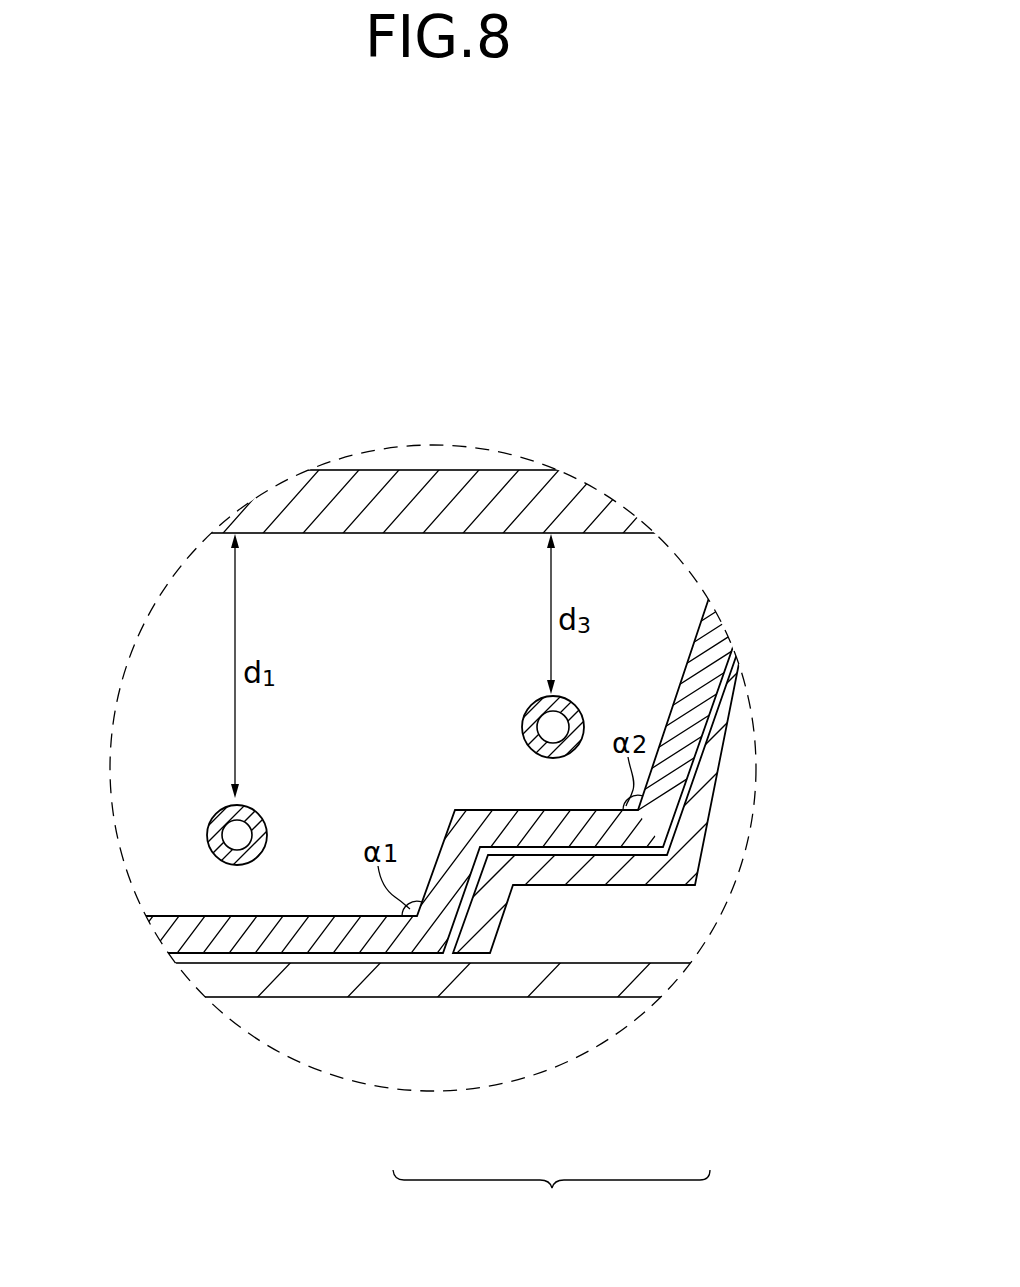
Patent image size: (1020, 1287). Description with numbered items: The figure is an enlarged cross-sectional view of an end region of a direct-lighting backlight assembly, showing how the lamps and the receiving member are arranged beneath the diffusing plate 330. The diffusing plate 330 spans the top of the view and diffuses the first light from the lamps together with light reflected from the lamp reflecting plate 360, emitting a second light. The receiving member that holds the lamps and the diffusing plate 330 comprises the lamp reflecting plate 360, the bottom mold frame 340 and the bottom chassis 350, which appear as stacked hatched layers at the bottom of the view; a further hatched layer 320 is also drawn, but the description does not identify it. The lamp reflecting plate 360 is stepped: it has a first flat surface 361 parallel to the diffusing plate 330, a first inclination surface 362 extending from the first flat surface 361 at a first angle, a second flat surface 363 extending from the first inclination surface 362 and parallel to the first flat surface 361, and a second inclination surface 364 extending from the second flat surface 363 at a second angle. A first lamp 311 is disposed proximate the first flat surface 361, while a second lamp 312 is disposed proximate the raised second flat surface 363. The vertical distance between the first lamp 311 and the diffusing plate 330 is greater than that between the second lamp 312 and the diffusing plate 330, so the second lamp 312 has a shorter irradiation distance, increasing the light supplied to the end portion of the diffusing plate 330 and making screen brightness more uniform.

The diffusing plate 330 is at (260, 505).
The lower layer with step 320 is at (152, 922).
The bottom mold frame 340 is at (731, 708).
The bottom chassis 350 is at (180, 966).
The first lamp 311 is at (207, 830).
The second lamp 312 is at (577, 707).
The lamp reflecting plate 360 is at (551, 1199).
The first flat surface 361 is at (414, 952).
The first inclination surface 362 is at (468, 915).
The second flat surface 363 is at (573, 847).
The second inclination surface 364 is at (683, 887).